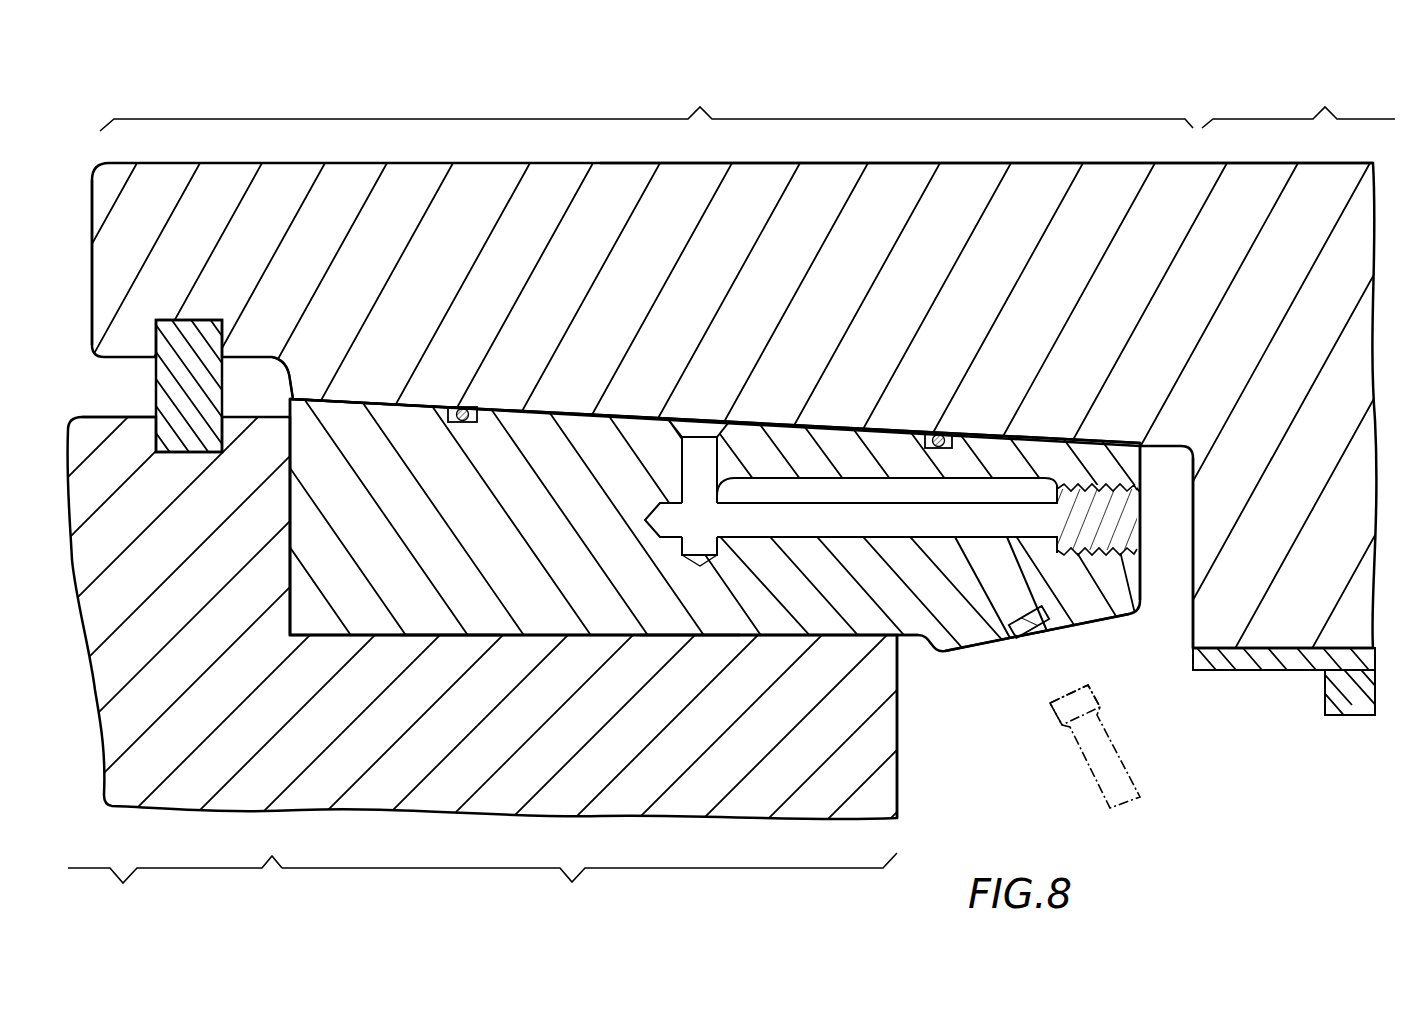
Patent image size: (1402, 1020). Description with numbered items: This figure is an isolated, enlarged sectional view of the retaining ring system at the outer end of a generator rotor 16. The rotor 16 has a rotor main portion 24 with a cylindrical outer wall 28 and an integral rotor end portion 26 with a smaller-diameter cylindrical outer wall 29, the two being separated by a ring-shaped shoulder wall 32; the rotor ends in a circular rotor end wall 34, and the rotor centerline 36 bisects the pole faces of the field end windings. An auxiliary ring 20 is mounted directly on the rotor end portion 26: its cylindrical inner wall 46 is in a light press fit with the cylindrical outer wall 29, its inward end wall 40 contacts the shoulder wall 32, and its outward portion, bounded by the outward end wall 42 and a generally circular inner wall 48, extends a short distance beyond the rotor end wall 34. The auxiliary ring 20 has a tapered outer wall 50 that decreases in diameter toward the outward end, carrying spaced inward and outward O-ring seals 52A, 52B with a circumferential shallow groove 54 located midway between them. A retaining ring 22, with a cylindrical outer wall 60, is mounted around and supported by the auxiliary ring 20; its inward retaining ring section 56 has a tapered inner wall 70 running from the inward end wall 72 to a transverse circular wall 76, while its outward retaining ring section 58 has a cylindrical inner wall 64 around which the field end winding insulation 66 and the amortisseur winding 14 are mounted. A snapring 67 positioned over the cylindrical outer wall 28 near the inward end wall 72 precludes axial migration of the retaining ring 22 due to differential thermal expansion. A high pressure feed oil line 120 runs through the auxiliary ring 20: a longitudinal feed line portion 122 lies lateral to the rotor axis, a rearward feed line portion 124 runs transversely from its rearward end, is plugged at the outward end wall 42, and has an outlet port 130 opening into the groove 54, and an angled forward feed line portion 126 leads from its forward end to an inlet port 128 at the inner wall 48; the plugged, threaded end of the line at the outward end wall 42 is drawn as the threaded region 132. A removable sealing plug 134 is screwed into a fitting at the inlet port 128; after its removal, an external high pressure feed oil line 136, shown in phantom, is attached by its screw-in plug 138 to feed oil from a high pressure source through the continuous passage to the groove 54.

The amortisseur winding 14 is at (1258, 668).
The rotor 16 is at (84, 655).
The auxiliary ring 20 is at (308, 546).
The retaining ring 22 is at (88, 180).
The rotor main portion 24 is at (175, 882).
The rotor end portion 26 is at (589, 881).
The cylindrical outer wall 28 is at (106, 416).
The cylindrical outer wall 29 is at (445, 638).
The shoulder wall 32 is at (290, 448).
The rotor end wall 34 is at (898, 778).
The rotor centerline 36 is at (686, 636).
The inward end wall 40 is at (293, 494).
The outward end wall 42 is at (1142, 468).
The cylindrical inner wall 46 is at (520, 632).
The circular inner wall 48 is at (1112, 625).
The tapered outer wall 50 is at (582, 425).
The inward O-ring seal 52A is at (468, 407).
The outward O-ring seal 52B is at (944, 433).
The circumferential shallow groove 54 is at (708, 423).
The inward retaining ring section 56 is at (646, 103).
The outward retaining ring section 58 is at (1298, 101).
The cylindrical outer wall 60 is at (966, 163).
The cylindrical inner wall 64 is at (1308, 648).
The field end winding insulation 66 is at (1350, 715).
The snapring 67 is at (152, 375).
The tapered inner wall 70 is at (568, 402).
The inward end wall 72 is at (92, 270).
The circular wall 76 is at (1193, 535).
The high pressure feed oil line 120 is at (590, 519).
The longitudinal feed line portion 122 is at (845, 478).
The rearward feed line portion 124 is at (680, 472).
The angled forward feed line portion 126 is at (1003, 622).
The inlet port 128 is at (1022, 648).
The outlet port 130 is at (722, 440).
The threaded portion 132 is at (1135, 538).
The removable sealing plug 134 is at (1043, 637).
The external high pressure feed oil line 136 is at (1132, 762).
The screw-in plug 138 is at (1052, 722).